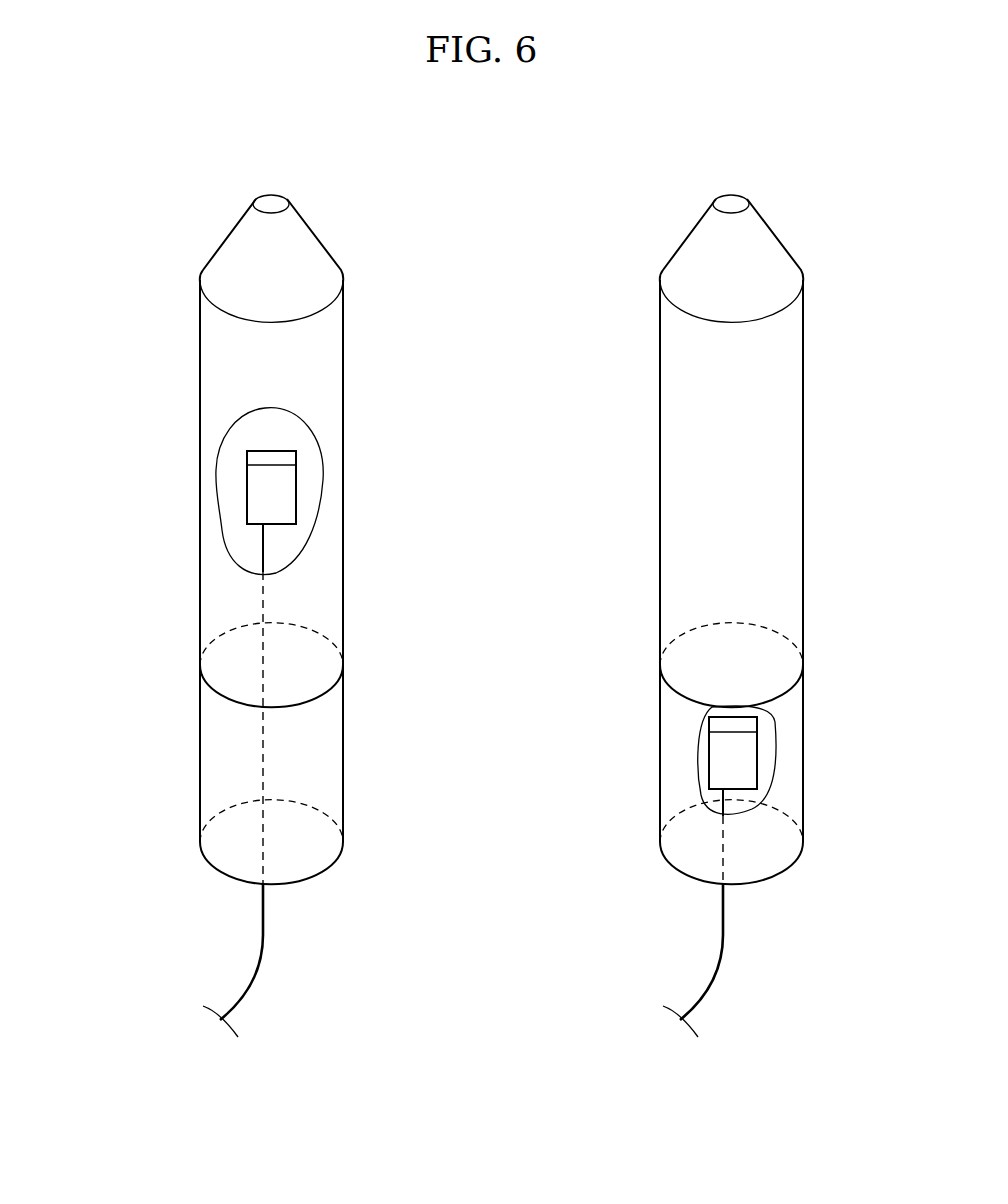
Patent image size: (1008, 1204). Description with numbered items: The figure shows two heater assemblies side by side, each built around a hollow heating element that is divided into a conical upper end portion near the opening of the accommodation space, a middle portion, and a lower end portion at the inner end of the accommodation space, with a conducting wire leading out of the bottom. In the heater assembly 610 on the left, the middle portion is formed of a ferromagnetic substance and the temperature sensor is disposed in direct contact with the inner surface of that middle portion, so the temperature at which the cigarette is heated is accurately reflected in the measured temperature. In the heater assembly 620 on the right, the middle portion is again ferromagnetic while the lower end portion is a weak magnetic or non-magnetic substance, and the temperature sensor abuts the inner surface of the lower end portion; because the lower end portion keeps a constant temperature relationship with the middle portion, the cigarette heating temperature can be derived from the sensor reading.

The heater assembly 610 is at (347, 203).
The heater assembly 620 is at (807, 203).